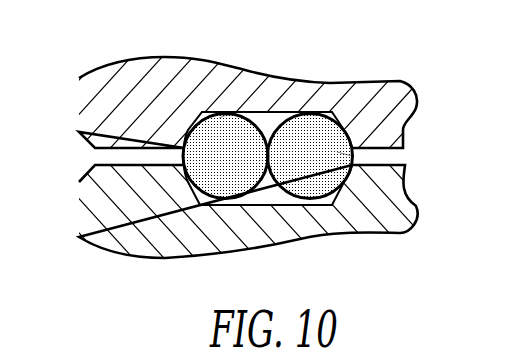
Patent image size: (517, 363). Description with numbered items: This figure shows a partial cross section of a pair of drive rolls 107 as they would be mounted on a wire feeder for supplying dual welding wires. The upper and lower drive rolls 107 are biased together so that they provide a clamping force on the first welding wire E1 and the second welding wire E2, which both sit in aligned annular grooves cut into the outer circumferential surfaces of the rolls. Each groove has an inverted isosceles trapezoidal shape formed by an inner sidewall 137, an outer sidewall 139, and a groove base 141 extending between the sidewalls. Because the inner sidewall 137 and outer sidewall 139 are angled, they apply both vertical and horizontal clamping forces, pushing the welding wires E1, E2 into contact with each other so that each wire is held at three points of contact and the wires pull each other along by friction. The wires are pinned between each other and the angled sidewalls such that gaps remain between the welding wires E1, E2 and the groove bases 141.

The drive rolls 107 is at (78, 117).
The outer sidewall 139 is at (190, 133).
The inner sidewall 137 is at (344, 132).
The groove base 141 is at (284, 111).
The first welding wire E1 is at (337, 152).
The second welding wire E2 is at (219, 118).